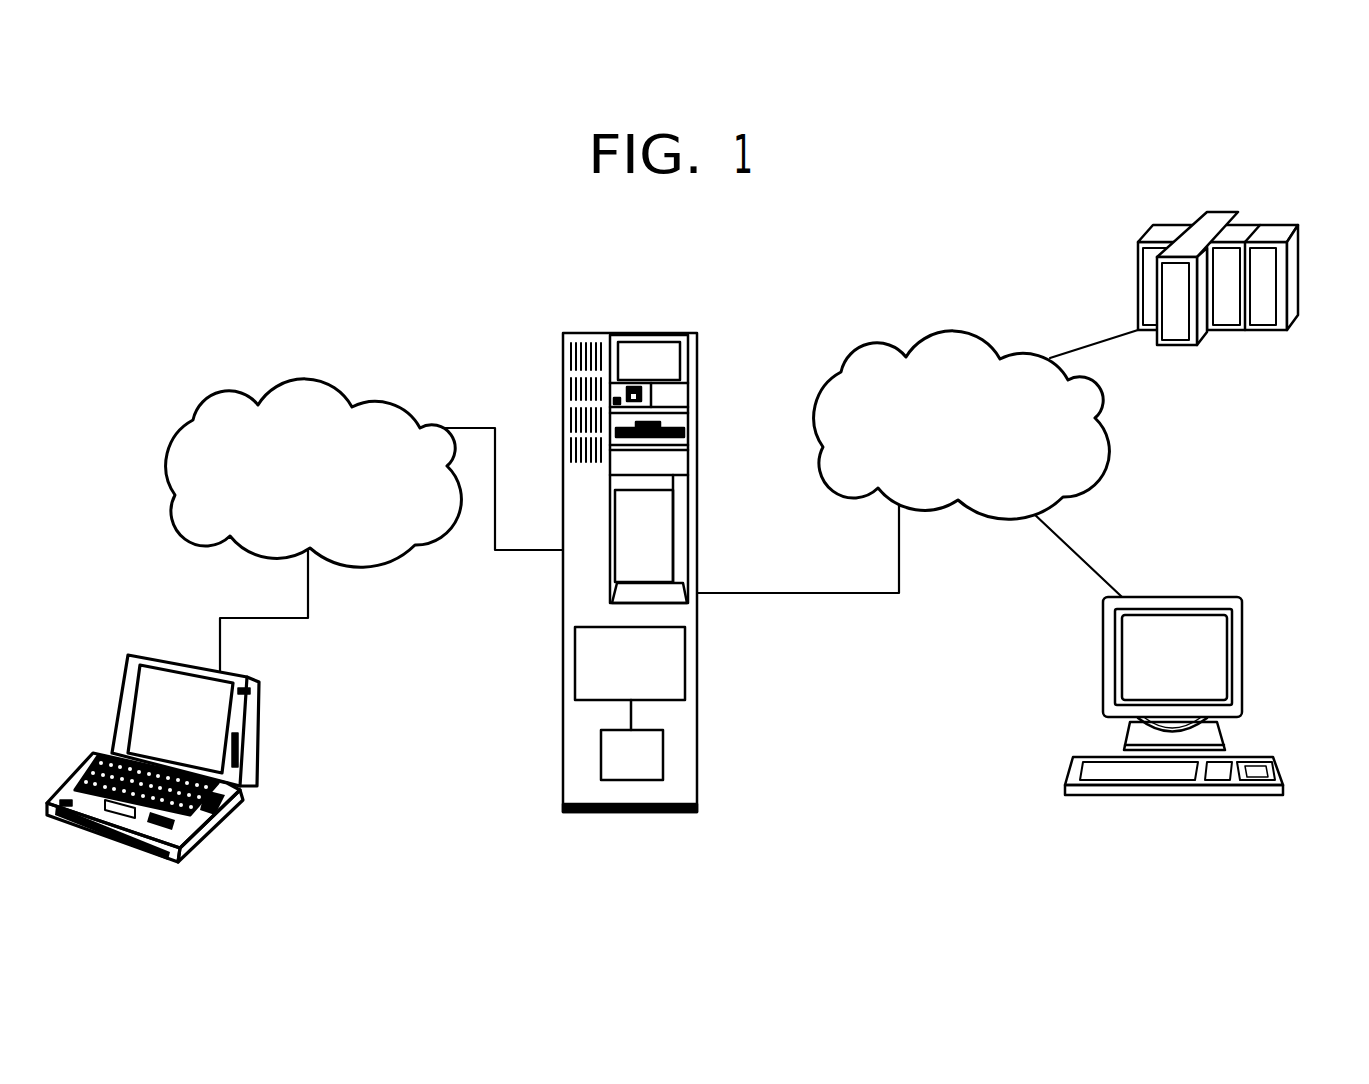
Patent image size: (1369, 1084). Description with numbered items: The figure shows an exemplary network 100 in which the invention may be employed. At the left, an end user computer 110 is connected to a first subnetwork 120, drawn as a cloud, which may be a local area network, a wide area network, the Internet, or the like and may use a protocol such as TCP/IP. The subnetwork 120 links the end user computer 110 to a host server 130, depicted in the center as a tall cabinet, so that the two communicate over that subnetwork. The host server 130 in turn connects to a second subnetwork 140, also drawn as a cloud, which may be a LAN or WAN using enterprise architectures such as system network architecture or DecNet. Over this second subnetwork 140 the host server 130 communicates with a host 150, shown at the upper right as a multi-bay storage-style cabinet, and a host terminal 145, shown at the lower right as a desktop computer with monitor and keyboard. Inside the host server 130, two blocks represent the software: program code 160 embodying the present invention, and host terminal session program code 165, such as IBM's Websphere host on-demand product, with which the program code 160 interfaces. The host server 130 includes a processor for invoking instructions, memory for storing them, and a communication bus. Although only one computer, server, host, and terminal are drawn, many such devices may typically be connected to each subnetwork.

The network 100 is at (214, 266).
The end user computer 110 is at (170, 661).
The subnetwork 120 is at (325, 378).
The host server 130 is at (652, 333).
The subnetwork 140 is at (947, 325).
The host terminal 145 is at (1186, 595).
The host 150 is at (1222, 208).
The program code 160 is at (685, 682).
The host terminal session program code 165 is at (663, 768).